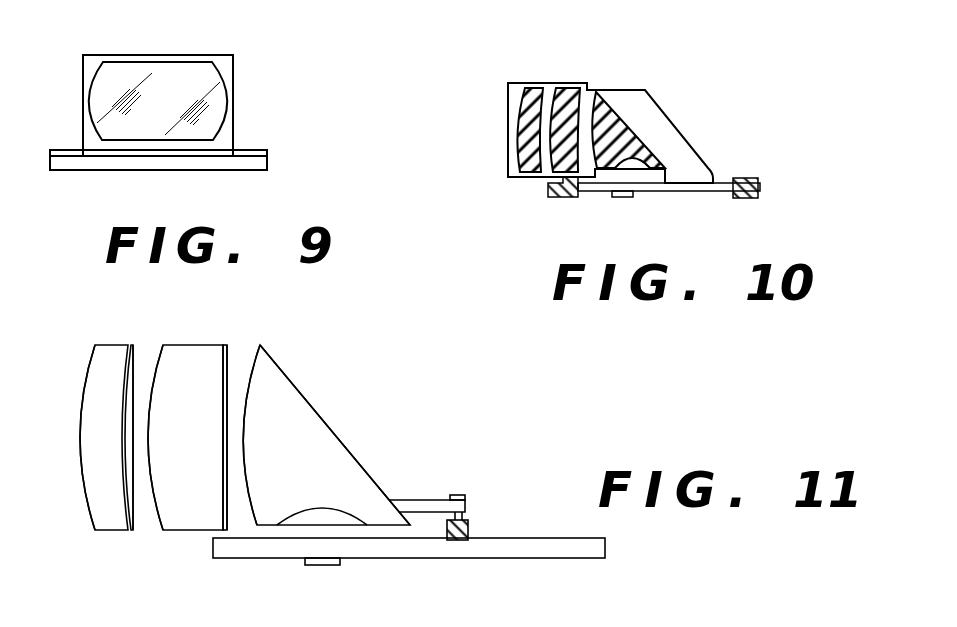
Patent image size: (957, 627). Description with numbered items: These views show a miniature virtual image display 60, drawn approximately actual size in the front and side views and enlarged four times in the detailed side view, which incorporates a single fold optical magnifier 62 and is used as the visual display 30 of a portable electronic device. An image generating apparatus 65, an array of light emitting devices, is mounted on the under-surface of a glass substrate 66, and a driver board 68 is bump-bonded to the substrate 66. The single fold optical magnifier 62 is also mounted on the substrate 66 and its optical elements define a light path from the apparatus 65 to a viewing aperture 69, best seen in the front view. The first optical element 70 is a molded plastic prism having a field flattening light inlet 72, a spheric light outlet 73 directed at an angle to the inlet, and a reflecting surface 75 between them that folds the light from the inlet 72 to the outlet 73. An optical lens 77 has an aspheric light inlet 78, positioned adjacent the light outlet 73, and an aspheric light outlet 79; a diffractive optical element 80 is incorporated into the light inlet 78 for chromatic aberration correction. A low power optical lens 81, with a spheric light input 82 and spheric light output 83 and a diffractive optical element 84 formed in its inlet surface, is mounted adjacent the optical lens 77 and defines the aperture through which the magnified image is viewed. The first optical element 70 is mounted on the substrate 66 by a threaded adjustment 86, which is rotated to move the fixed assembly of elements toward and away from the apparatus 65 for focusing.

In FIG. 9, the lens assembly 30 is at (321, 205).
In FIG. 10, the miniature virtual image display 60 is at (522, 272).
In FIG. 9, the single fold optical magnifier 62 is at (260, 88).
In FIG. 10, the single fold optical magnifier 62 is at (598, 65).
In FIG. 10, the image generating apparatus 65 is at (620, 198).
In FIG. 11, the image generating apparatus 65 is at (313, 565).
In FIG. 10, the glass substrate 66 is at (590, 197).
In FIG. 11, the glass substrate 66 is at (552, 538).
In FIG. 10, the driver board 68 is at (743, 198).
In FIG. 9, the viewing aperture 69 is at (107, 95).
In FIG. 11, the first optical element 70 is at (312, 448).
In FIG. 11, the field flattening light inlet 72 is at (328, 515).
In FIG. 11, the light outlet 73 is at (250, 393).
In FIG. 11, the reflecting surface 75 is at (298, 385).
In FIG. 11, the optical lens 77 is at (193, 507).
In FIG. 11, the light inlet 78 is at (229, 360).
In FIG. 11, the light outlet 79 is at (162, 355).
In FIG. 11, the diffractive optical element 80 is at (222, 343).
In FIG. 11, the low power optical lens 81 is at (93, 447).
In FIG. 11, the light input 82 is at (133, 515).
In FIG. 11, the light output 83 is at (80, 400).
In FIG. 11, the diffractive optical element 84 is at (132, 537).
In FIG. 11, the threaded adjustment 86 is at (478, 477).